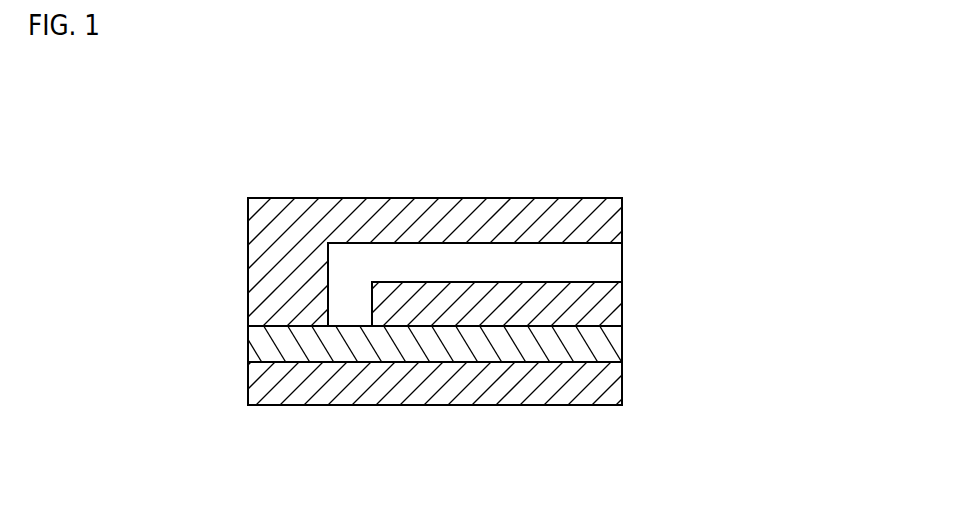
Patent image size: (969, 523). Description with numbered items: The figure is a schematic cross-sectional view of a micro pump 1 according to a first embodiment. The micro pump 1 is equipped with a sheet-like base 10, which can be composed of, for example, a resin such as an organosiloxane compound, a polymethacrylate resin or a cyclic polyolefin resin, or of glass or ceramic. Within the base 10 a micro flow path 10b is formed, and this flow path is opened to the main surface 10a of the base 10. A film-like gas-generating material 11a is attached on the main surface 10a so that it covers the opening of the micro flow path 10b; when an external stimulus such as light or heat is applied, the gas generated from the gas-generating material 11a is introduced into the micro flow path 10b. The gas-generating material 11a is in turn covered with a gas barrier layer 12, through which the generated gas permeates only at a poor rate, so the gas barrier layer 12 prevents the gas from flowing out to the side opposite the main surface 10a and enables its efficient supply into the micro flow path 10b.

The micro pump 1 is at (662, 162).
The base 10 is at (508, 197).
The main surface 10a is at (289, 327).
The micro flow path 10b is at (598, 244).
The gas-generating material 11a is at (623, 345).
The gas barrier layer 12 is at (623, 387).